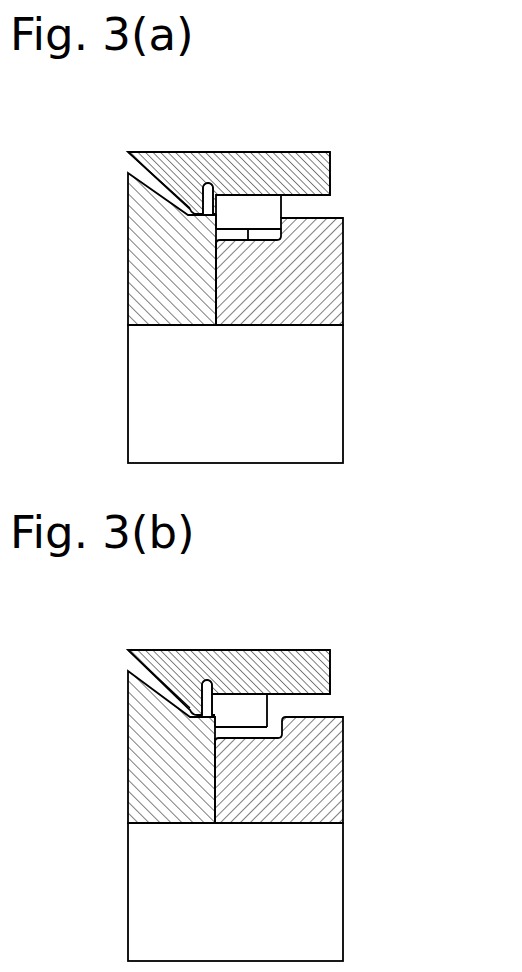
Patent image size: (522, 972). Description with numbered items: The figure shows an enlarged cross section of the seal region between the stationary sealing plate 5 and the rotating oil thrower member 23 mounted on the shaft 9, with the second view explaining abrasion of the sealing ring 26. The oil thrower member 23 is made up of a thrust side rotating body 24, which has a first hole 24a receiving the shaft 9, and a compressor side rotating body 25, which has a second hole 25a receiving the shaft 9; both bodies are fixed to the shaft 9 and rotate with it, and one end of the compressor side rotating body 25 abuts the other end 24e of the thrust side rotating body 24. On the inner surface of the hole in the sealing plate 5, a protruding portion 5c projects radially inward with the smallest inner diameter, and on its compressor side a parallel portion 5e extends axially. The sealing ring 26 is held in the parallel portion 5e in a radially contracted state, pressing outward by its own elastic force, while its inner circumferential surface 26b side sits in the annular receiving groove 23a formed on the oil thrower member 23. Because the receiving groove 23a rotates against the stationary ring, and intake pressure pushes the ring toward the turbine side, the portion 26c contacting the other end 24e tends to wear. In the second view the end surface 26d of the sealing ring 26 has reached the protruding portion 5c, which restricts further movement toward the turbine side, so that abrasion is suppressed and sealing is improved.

In FIG. 3A, the sealing plate 5 is at (328, 152).
In FIG. 3B, the sealing plate 5 is at (303, 651).
In FIG. 3A, the protruding portion 5c is at (196, 212).
In FIG. 3B, the protruding portion 5c is at (158, 649).
In FIG. 3A, the parallel portion 5e is at (328, 204).
In FIG. 3B, the parallel portion 5e is at (393, 682).
In FIG. 3A, the shaft 9 is at (268, 425).
In FIG. 3B, the shaft 9 is at (235, 892).
In FIG. 3A, the oil thrower member 23 is at (300, 87).
In FIG. 3B, the oil thrower member 23 is at (255, 738).
In FIG. 3A, the receiving groove 23a is at (216, 222).
In FIG. 3B, the receiving groove 23a is at (134, 750).
In FIG. 3A, the thrust side rotating body 24 is at (209, 186).
In FIG. 3B, the thrust side rotating body 24 is at (148, 756).
In FIG. 3A, the first hole 24a is at (173, 327).
In FIG. 3B, the first hole 24a is at (134, 849).
In FIG. 3A, the other end 24e is at (215, 305).
In FIG. 3B, the other end 24e is at (146, 832).
In FIG. 3A, the compressor side rotating body 25 is at (312, 218).
In FIG. 3B, the compressor side rotating body 25 is at (336, 727).
In FIG. 3A, the second hole 25a is at (268, 326).
In FIG. 3B, the second hole 25a is at (336, 845).
In FIG. 3A, the sealing ring 26 is at (258, 229).
In FIG. 3B, the sealing ring 26 is at (255, 733).
In FIG. 3A, the inner circumferential surface 26b is at (250, 245).
In FIG. 3B, the inner circumferential surface 26b is at (338, 762).
In FIG. 3A, the portion in contact with the other end 26c is at (222, 230).
In FIG. 3B, the portion in contact with the other end 26c is at (150, 738).
In FIG. 3A, the end surface 26d is at (203, 221).
In FIG. 3B, the end surface 26d is at (132, 701).